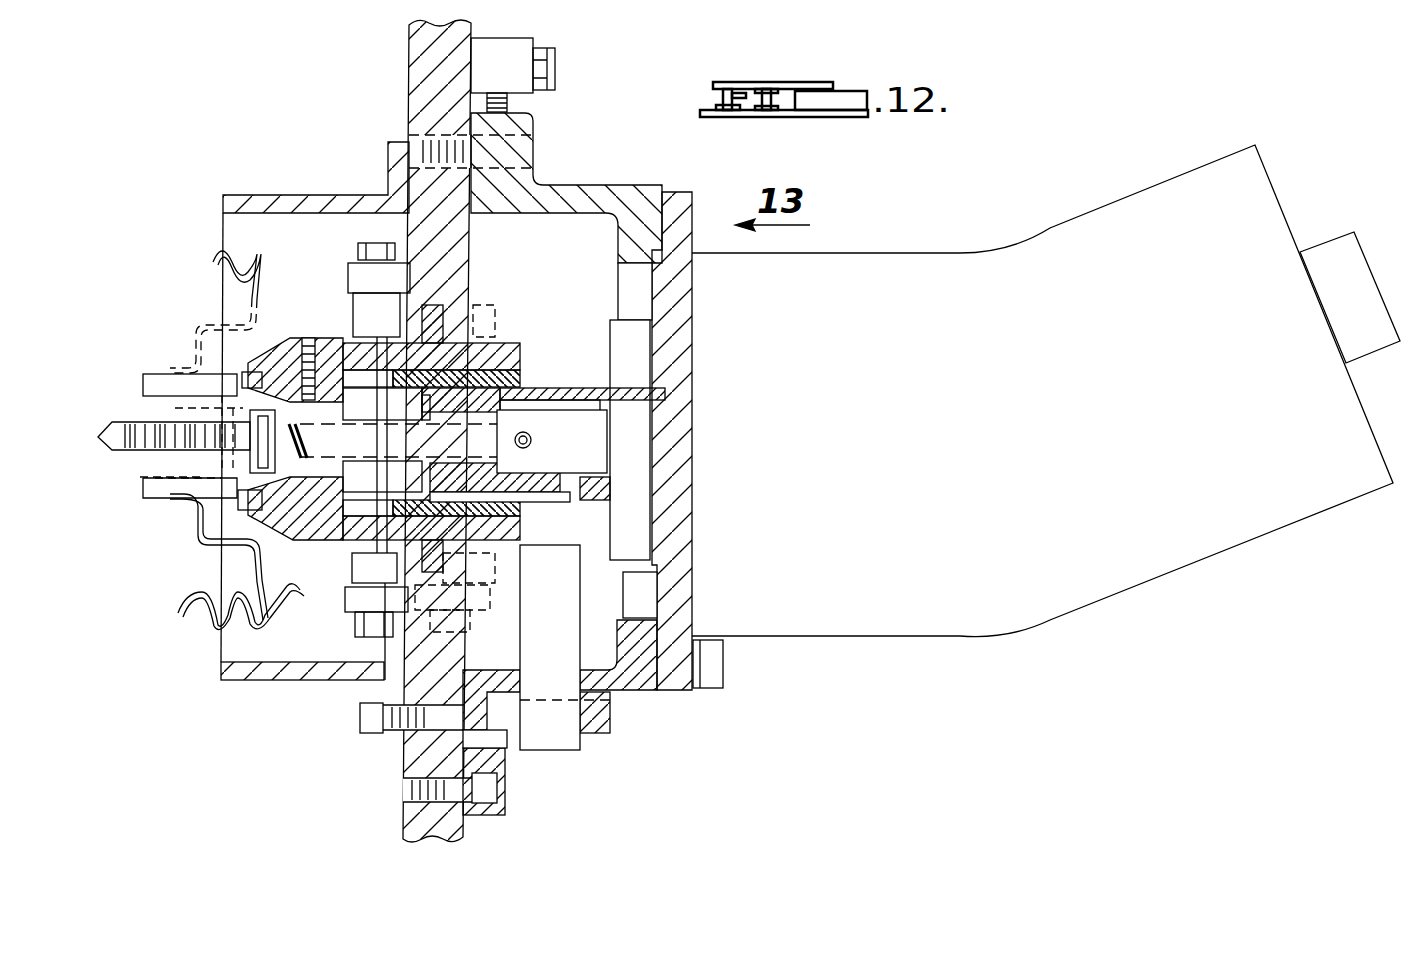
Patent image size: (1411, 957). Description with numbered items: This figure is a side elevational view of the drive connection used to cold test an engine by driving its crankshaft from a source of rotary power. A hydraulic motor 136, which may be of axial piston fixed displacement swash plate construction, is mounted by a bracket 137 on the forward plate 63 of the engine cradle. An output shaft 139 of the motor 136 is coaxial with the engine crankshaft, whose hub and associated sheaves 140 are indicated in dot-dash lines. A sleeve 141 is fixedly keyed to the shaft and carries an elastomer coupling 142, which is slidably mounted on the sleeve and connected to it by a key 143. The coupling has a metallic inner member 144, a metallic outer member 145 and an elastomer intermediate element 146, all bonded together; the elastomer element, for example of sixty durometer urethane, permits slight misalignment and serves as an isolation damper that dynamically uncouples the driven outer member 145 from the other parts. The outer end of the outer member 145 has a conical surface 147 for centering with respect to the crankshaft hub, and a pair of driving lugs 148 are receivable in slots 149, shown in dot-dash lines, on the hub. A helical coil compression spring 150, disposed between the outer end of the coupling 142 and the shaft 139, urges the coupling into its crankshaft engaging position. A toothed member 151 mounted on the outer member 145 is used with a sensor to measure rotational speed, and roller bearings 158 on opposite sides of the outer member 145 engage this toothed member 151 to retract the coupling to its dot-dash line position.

The forward plate 63 is at (424, 50).
The bracket 137 is at (590, 192).
The elastomer intermediate element 146 is at (418, 335).
The toothed member 151 is at (446, 320).
The elastomer coupling 142 is at (463, 330).
The metallic outer member 145 is at (500, 340).
The sleeve 141 is at (522, 345).
The output shaft 139 is at (543, 430).
The driving lugs 148 is at (260, 322).
The conical surface 147 is at (286, 337).
The crankshaft hub and associated sheaves 140 is at (160, 374).
The helical coil compression spring 150 is at (303, 446).
The metallic inner member 144 is at (393, 408).
The slots 149 is at (243, 500).
The key 143 is at (555, 500).
The roller bearings 158 is at (355, 568).
The hydraulic motor 136 is at (838, 618).